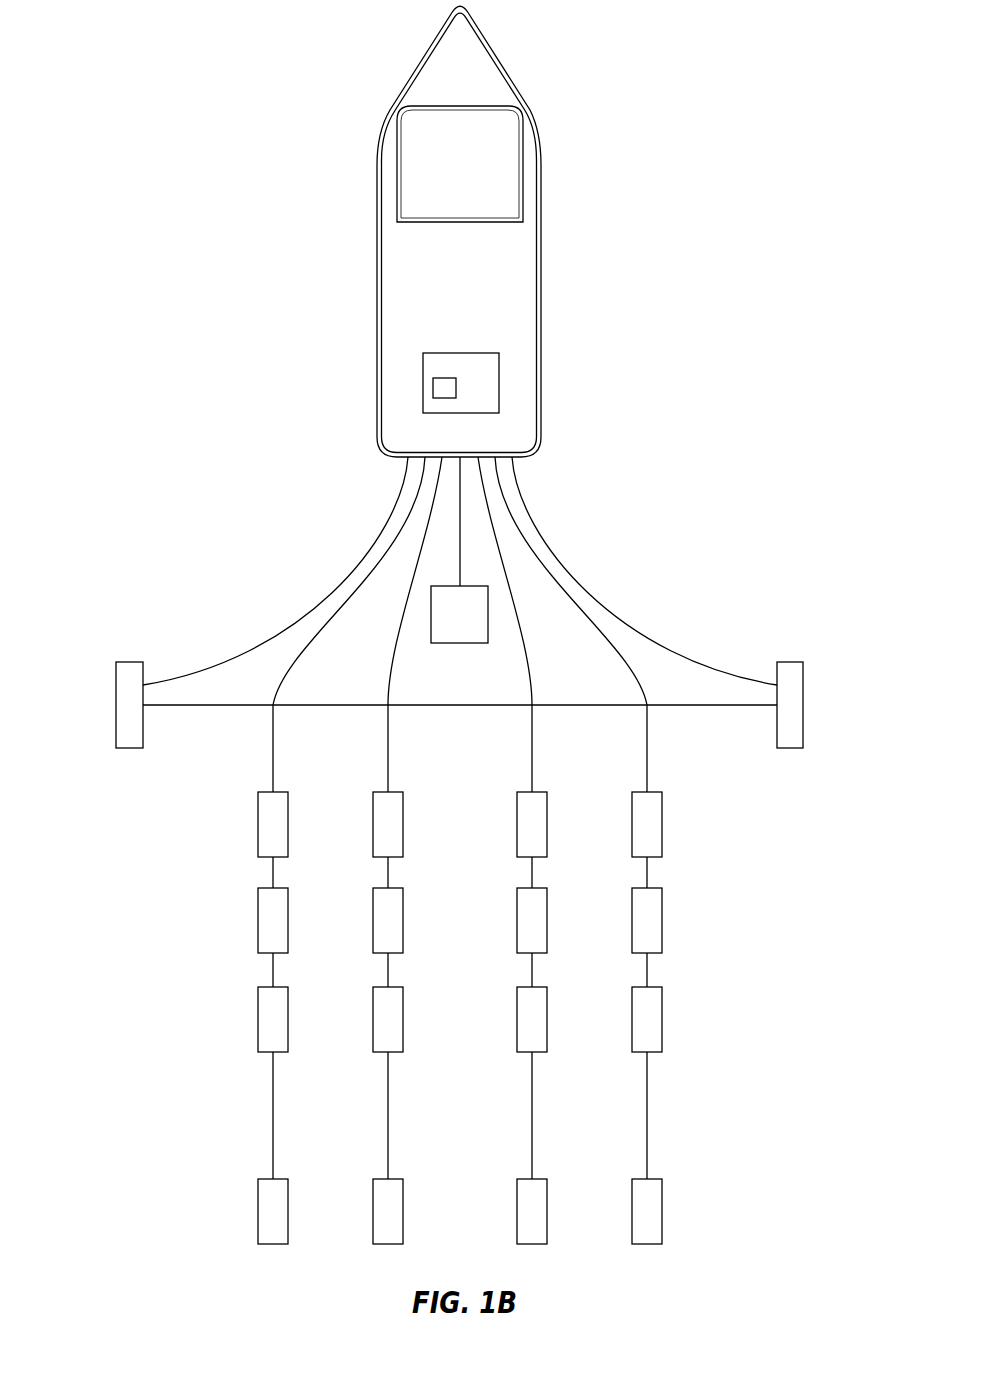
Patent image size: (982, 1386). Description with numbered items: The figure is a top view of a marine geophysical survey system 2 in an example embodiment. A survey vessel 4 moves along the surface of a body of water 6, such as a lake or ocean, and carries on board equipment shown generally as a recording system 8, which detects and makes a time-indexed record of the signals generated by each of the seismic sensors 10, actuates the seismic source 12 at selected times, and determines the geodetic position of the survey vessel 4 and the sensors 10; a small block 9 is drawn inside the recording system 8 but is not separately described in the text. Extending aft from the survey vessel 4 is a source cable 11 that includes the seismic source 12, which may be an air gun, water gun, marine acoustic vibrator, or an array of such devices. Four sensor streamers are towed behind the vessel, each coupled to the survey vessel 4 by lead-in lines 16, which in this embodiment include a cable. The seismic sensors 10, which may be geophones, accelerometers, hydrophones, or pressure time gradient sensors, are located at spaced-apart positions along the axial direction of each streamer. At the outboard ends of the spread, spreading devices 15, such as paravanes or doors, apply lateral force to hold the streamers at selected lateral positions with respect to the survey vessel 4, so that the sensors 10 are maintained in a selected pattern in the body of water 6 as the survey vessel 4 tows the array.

The marine geophysical survey system 2 is at (629, 434).
The survey vessel 4 is at (407, 83).
The body of water 6 is at (266, 390).
The recording system 8 is at (462, 368).
The processor 9 is at (442, 378).
The seismic sensors 10 is at (263, 818).
The source cable 11 is at (463, 540).
The seismic source 12 is at (448, 644).
The spreading device 15 is at (122, 723).
The lead-in lines 16 is at (271, 759).